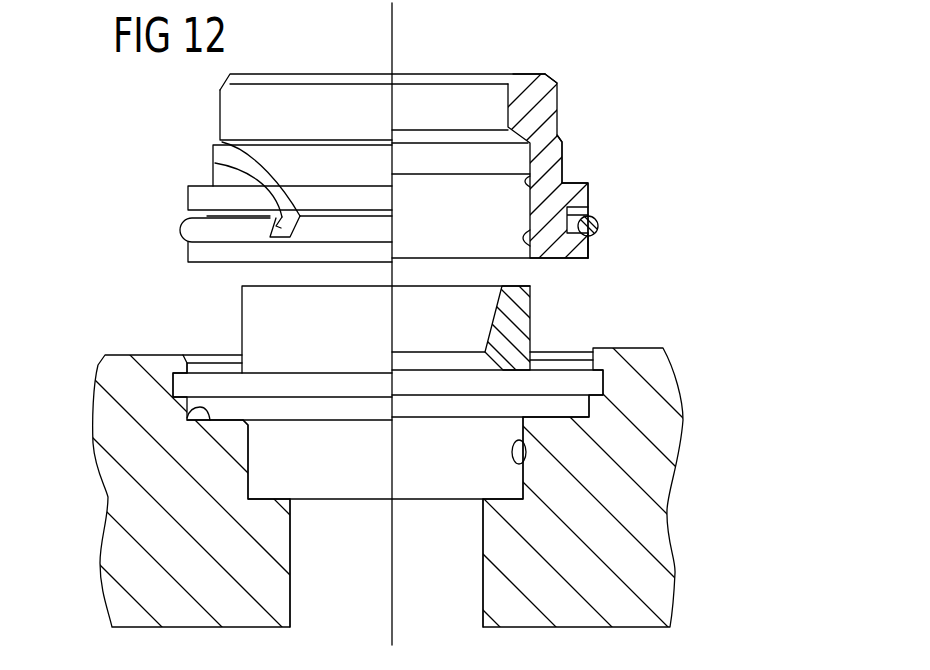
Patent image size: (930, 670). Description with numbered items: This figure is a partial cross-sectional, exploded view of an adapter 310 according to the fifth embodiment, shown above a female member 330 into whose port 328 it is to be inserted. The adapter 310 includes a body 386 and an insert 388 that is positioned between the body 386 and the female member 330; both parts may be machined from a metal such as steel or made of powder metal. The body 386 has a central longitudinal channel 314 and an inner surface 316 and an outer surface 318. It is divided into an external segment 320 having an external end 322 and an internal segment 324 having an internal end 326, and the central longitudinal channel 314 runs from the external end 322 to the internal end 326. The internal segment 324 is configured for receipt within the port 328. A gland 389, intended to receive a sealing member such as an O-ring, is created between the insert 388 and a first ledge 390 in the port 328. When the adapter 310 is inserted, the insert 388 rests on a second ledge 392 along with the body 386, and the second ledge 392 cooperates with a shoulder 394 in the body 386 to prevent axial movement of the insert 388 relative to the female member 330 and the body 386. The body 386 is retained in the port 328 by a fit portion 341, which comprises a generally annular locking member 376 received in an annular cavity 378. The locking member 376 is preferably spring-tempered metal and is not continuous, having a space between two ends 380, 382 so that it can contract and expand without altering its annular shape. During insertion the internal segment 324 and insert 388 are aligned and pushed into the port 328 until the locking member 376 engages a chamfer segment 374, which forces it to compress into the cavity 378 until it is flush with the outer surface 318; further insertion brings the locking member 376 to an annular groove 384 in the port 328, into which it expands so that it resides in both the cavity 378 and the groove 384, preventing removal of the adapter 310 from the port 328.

The adapter 310 is at (160, 103).
The central longitudinal channel 314 is at (487, 229).
The inner surface 316 is at (590, 249).
The outer surface 318 is at (590, 196).
The external segment 320 is at (580, 98).
The external end 322 is at (552, 80).
The internal segment 324 is at (165, 198).
The internal end 326 is at (562, 262).
The port 328 is at (470, 581).
The female member 330 is at (694, 488).
The fit portion 341 is at (158, 236).
The chamfer segment 374 is at (593, 350).
The locking member 376 is at (210, 233).
The annular cavity 378 is at (598, 210).
The end 380 is at (215, 163).
The end 382 is at (223, 145).
The annular groove 384 is at (185, 378).
The body 386 is at (565, 152).
The insert 388 is at (532, 327).
The gland 389 is at (525, 462).
The first ledge 390 is at (265, 500).
The second ledge 392 is at (187, 414).
The shoulder 394 is at (530, 183).